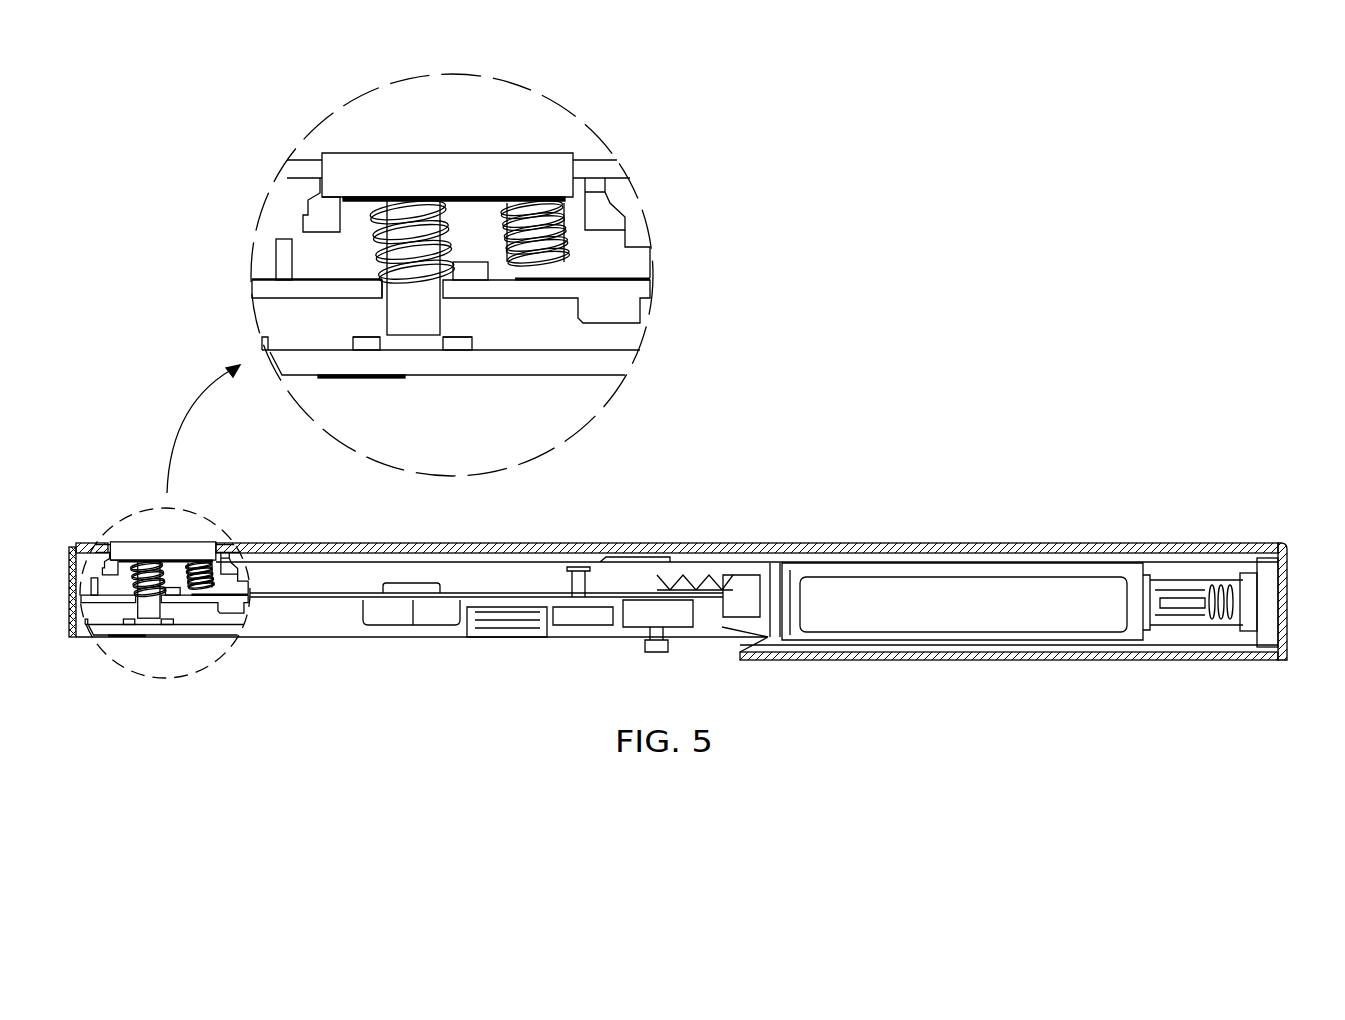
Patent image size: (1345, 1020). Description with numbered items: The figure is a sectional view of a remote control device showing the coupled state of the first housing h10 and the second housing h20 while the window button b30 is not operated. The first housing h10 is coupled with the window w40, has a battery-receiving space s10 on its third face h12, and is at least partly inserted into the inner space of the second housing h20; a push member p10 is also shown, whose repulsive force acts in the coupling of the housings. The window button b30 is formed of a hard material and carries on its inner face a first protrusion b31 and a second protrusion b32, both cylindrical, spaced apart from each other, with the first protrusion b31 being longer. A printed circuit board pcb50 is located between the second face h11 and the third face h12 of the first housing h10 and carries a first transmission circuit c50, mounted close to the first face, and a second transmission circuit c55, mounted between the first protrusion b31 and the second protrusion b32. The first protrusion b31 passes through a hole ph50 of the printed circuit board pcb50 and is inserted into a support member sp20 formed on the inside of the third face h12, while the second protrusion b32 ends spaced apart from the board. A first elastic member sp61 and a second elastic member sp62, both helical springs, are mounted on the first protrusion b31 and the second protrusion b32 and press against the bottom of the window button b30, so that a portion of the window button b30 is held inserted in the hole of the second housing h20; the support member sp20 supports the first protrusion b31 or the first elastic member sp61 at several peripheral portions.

The window button b30 is at (452, 160).
The first protrusion b31 is at (408, 318).
The second protrusion b32 is at (562, 247).
The first elastic member sp61 is at (406, 212).
The second elastic member sp62 is at (548, 200).
The support member sp20 is at (367, 347).
The second housing h20 is at (612, 170).
The second face h11 is at (620, 190).
The third face h12 is at (632, 360).
The first housing h10 is at (1143, 560).
The printed circuit board pcb50 is at (637, 296).
The hole of the printed circuit board ph50 is at (380, 292).
The first transmission circuit c50 is at (283, 273).
The second transmission circuit c55 is at (473, 268).
The window w40 is at (55, 548).
The battery-receiving space s10 is at (980, 603).
The push member p10 is at (1242, 602).